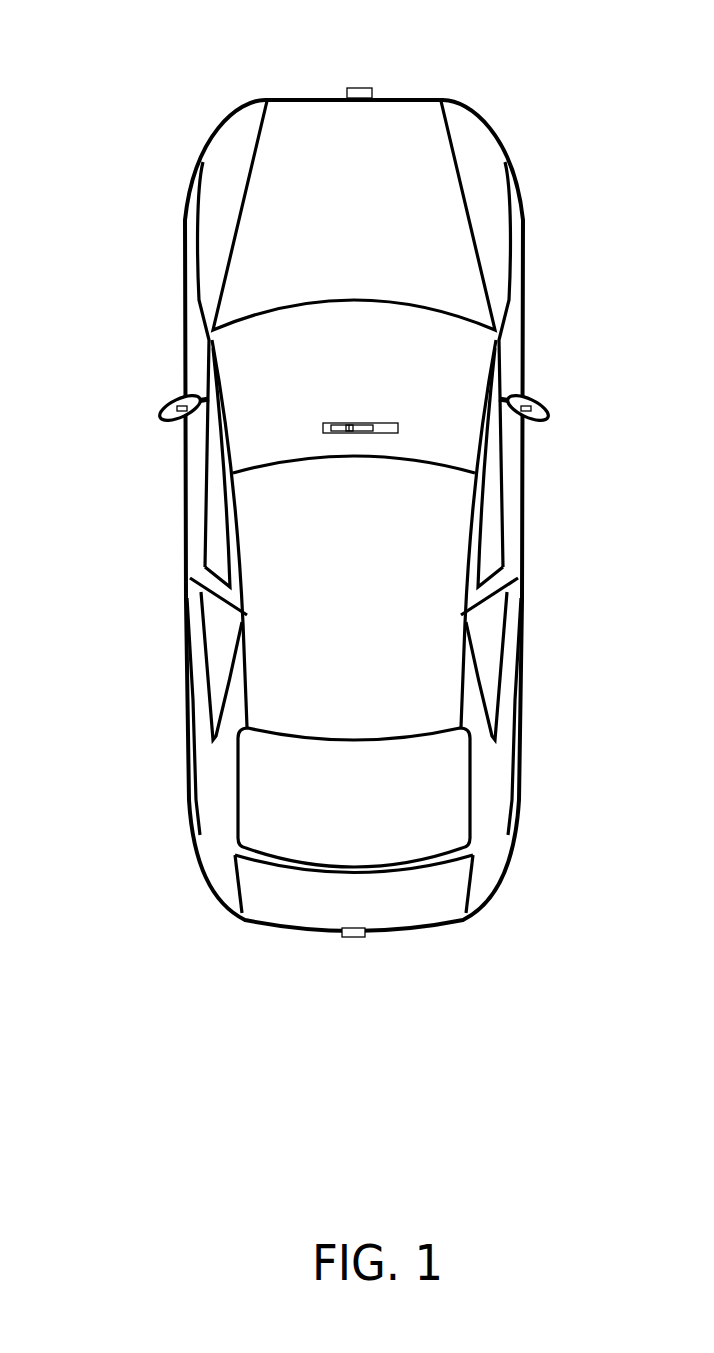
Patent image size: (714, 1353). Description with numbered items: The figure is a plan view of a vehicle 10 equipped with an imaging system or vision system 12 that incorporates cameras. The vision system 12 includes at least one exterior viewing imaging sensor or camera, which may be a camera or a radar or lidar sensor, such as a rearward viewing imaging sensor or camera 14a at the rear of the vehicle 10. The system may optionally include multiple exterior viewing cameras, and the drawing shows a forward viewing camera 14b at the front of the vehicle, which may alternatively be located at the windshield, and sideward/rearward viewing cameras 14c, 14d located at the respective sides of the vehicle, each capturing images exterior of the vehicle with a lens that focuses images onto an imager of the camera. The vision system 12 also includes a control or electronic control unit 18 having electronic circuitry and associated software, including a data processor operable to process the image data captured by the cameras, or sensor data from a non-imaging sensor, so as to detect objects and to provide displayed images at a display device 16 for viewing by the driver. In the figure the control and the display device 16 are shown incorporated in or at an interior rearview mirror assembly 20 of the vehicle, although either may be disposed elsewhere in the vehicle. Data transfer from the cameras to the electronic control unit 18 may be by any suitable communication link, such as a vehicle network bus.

The vehicle 10 is at (118, 102).
The vision system 12 is at (317, 944).
The rearward viewing camera 14a is at (360, 938).
The forward viewing camera 14b is at (362, 88).
The sideward/rearward viewing camera 14c is at (168, 405).
The sideward/rearward viewing camera 14d is at (533, 405).
The display device 16 is at (338, 424).
The electronic control unit 18 is at (358, 424).
The interior rearview mirror assembly 20 is at (398, 423).